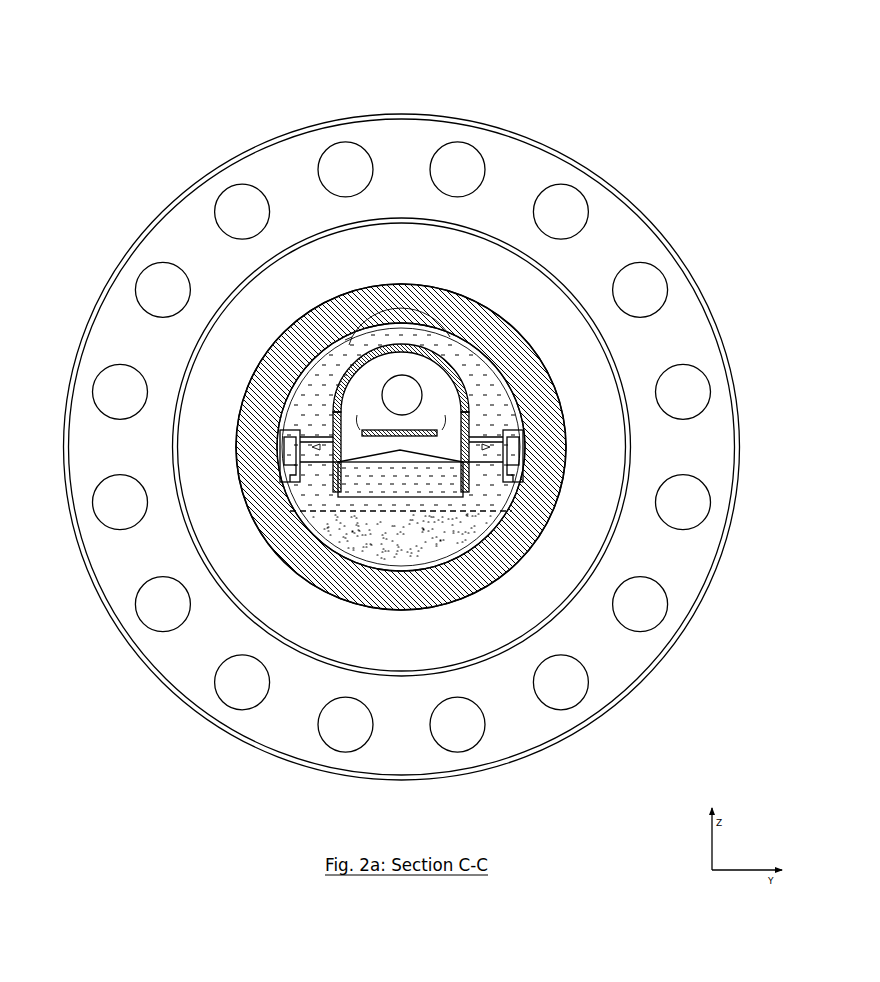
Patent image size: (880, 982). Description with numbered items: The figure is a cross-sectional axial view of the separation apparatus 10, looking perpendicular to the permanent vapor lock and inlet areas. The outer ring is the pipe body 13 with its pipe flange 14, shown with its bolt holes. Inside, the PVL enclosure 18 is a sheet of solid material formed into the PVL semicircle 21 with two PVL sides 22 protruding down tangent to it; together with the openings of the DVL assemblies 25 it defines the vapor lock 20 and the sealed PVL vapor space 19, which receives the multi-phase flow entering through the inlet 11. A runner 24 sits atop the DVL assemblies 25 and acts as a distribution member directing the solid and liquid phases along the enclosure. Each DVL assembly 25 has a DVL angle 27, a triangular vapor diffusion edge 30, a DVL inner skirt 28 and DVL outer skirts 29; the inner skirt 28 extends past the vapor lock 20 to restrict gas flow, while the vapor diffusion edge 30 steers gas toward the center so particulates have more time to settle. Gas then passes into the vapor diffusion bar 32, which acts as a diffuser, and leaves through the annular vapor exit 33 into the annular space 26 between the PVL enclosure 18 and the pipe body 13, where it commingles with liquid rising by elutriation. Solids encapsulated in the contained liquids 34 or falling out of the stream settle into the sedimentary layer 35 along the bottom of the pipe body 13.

The separation apparatus 10 is at (408, 413).
The inlet 11 is at (393, 375).
The pipe body 13 is at (242, 506).
The pipe flange 14 is at (131, 657).
The PVL enclosure 18 is at (357, 356).
The PVL vapor space 19 is at (428, 375).
The vapor lock 20 is at (392, 462).
The PVL semicircle 21 is at (442, 352).
The PVL sides 22 is at (328, 418).
The runner 24 is at (277, 423).
The DVL assembly 25 is at (532, 455).
The annular space 26 is at (487, 430).
The DVL angle 27 is at (523, 442).
The DVL inner skirt 28 is at (437, 498).
The DVL outer skirt 29 is at (482, 477).
The vapor diffusion edge 30 is at (523, 393).
The vapor diffusion bar 32 is at (242, 412).
The annular vapor exit 33 is at (565, 472).
The contained liquids 34 is at (403, 507).
The sedimentary layer 35 is at (380, 557).